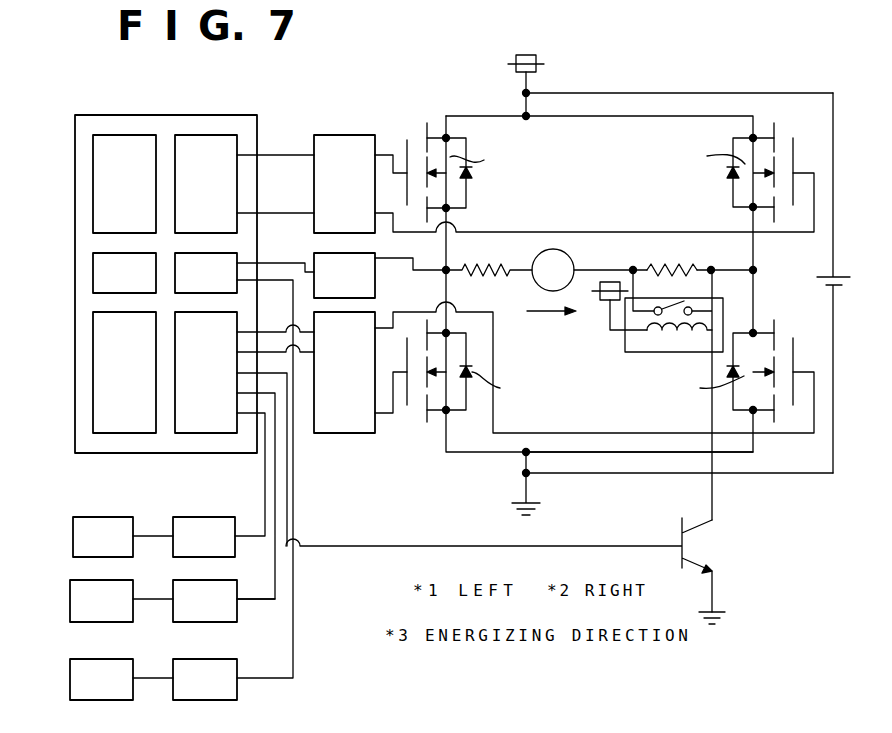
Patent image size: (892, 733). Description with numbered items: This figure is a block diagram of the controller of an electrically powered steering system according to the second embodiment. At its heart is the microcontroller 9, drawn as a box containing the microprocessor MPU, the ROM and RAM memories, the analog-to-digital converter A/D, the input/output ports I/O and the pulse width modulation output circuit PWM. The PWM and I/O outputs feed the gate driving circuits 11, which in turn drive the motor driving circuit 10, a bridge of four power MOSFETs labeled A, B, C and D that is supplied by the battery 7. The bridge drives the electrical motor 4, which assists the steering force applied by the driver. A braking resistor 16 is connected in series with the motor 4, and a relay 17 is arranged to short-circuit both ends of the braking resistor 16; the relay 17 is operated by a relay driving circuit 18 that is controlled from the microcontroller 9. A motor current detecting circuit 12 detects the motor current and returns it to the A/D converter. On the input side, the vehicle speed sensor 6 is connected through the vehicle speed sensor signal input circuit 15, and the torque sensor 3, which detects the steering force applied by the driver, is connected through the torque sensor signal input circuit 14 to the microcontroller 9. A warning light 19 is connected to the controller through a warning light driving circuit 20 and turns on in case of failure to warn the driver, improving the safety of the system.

The microcontroller 9 is at (160, 125).
The gate driving circuits 11 is at (355, 150).
The motor current detecting circuit 12 is at (331, 263).
The motor driving circuit 10 is at (618, 133).
The electrical motor 4 is at (548, 250).
The braking resistor 16 is at (682, 258).
The battery 7 is at (838, 262).
The relay 17 is at (655, 325).
The relay driving circuit 18 is at (703, 540).
The vehicle speed sensor 6 is at (110, 537).
The vehicle speed sensor signal input circuit 15 is at (205, 530).
The warning light 19 is at (78, 608).
The warning light driving circuit 20 is at (222, 607).
The torque sensor 3 is at (80, 687).
The torque sensor signal input circuit 14 is at (222, 684).